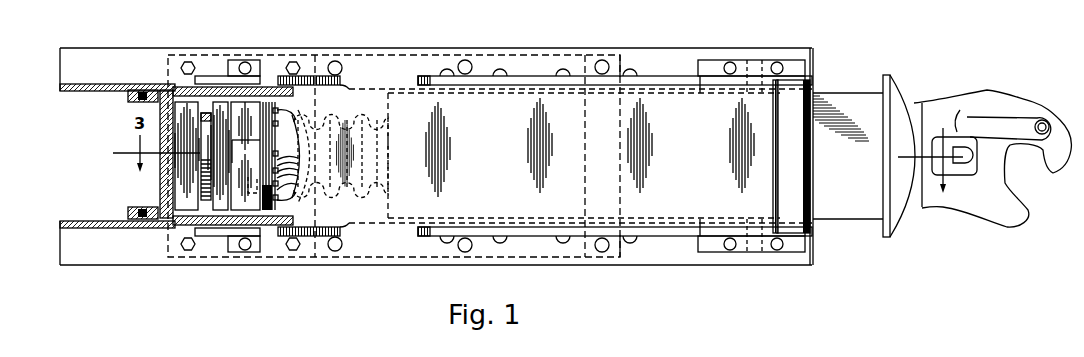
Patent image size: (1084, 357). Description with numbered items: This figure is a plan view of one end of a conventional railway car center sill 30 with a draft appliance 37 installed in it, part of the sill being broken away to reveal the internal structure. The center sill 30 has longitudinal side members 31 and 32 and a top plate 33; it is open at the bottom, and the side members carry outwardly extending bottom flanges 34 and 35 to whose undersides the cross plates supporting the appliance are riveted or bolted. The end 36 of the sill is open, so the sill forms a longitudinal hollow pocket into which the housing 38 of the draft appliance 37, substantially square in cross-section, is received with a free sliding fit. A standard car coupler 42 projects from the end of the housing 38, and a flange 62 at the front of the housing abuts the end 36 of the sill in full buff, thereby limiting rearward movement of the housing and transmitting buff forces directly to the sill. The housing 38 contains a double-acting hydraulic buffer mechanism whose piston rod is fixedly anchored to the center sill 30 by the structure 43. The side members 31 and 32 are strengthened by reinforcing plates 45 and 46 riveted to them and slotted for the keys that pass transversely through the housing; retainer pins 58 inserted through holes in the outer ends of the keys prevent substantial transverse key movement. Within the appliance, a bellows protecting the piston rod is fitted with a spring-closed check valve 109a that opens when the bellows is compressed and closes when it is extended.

The center sill 30 is at (136, 47).
The side member 31 is at (70, 227).
The side member 32 is at (66, 82).
The top plate 33 is at (354, 98).
The bottom flange 34 is at (107, 258).
The bottom flange 35 is at (117, 48).
The end of center sill 36 is at (820, 103).
The draft appliance 37 is at (854, 88).
The housing 38 is at (838, 213).
The car coupler 42 is at (958, 92).
The anchoring structure 43 is at (218, 102).
The reinforcing plate 45 is at (657, 231).
The reinforcing plate 46 is at (647, 80).
The retainer pin 58 is at (731, 62).
The flange 62 is at (888, 232).
The check valve 109a is at (238, 207).